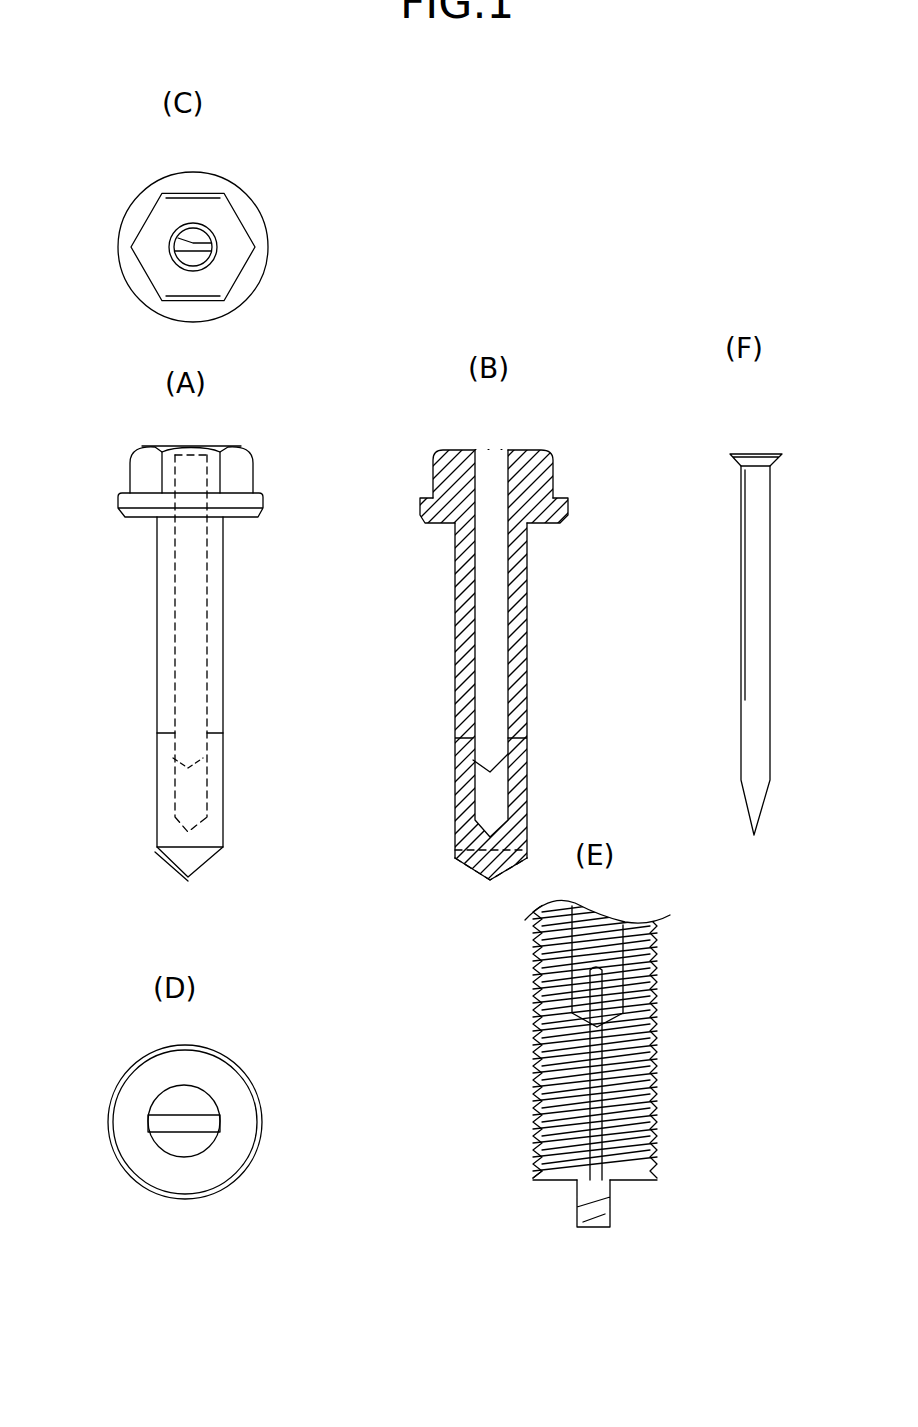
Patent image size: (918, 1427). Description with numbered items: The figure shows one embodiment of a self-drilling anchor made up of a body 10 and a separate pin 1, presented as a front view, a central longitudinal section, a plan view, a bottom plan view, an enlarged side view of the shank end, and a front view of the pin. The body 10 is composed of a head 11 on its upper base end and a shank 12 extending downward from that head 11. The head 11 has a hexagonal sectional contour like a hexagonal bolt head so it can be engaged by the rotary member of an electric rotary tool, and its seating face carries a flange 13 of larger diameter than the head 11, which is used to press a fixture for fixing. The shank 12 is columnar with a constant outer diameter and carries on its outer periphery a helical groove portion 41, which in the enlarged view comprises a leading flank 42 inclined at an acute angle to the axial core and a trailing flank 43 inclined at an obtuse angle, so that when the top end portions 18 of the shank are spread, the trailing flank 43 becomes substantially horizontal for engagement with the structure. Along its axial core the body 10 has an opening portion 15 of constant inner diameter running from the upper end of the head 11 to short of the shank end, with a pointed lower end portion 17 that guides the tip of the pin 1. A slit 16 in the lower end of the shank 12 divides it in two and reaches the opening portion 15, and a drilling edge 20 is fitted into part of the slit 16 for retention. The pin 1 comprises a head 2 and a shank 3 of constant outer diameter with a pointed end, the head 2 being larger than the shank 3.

The pin 1 is at (771, 592).
The head 2 is at (764, 454).
The shank 3 is at (757, 713).
The body 10 is at (238, 181).
The head 11 is at (152, 208).
The shank 12 is at (218, 697).
The flange 13 is at (147, 287).
The opening portion 15 is at (200, 267).
The slit 16 is at (212, 243).
The lower end portion 17 is at (205, 772).
The top end portions 18 is at (197, 1102).
The drilling edge 20 is at (200, 860).
The helical groove portion 41 is at (537, 1005).
The leading flank 42 is at (535, 1147).
The trailing flank 43 is at (535, 1175).